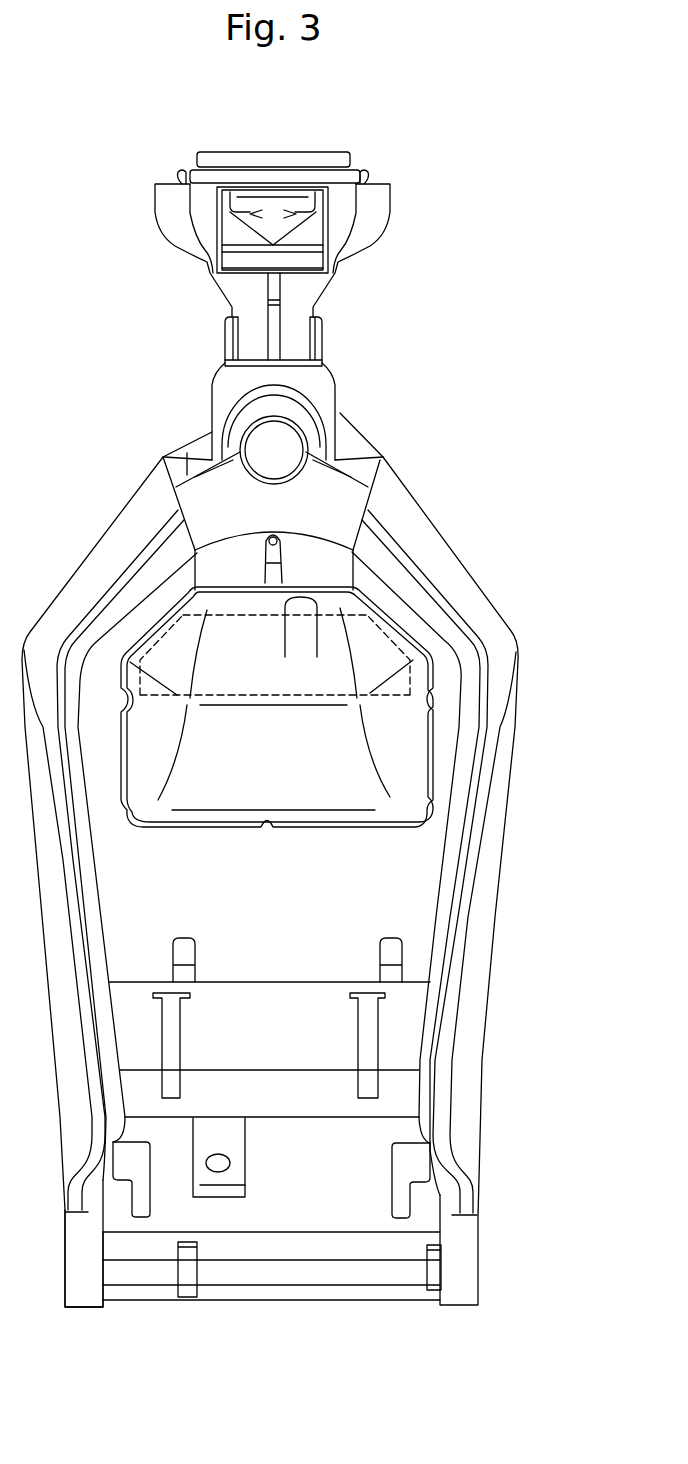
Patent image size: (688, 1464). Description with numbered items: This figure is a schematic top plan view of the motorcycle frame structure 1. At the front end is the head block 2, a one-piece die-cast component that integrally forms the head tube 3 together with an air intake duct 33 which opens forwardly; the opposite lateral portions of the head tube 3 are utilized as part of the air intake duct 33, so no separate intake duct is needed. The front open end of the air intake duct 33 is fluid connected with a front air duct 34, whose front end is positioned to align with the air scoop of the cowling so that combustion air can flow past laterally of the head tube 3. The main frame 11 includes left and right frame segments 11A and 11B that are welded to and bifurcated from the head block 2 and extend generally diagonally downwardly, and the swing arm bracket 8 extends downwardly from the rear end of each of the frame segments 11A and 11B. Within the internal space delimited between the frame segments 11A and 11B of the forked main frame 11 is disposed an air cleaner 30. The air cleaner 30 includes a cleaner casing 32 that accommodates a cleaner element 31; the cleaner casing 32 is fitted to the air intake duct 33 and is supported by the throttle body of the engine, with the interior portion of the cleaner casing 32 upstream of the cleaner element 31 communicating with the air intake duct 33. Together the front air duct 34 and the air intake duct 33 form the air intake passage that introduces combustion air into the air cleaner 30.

The motorcycle frame structure 1 is at (489, 589).
The head block 2 is at (477, 362).
The head tube 3 is at (302, 438).
The swing arm bracket 8 is at (90, 1308).
The main frame 11 is at (508, 857).
The left frame segment 11A is at (423, 548).
The right frame segment 11B is at (120, 557).
The air cleaner 30 is at (272, 832).
The cleaner element 31 is at (278, 697).
The cleaner casing 32 is at (327, 834).
The air intake duct 33 is at (300, 510).
The front air duct 34 is at (311, 290).